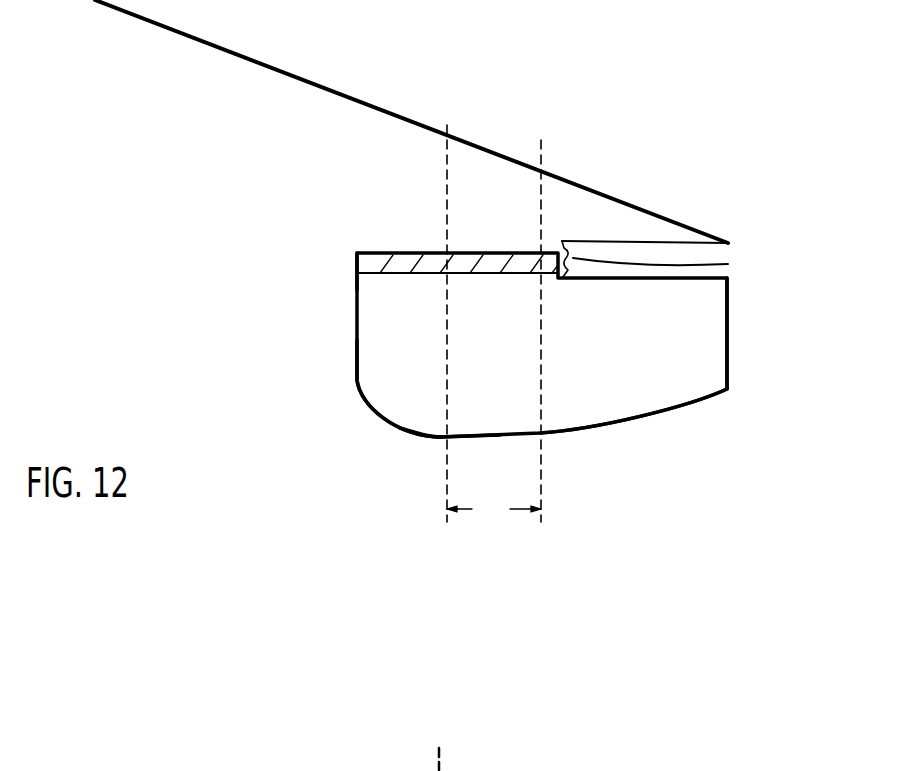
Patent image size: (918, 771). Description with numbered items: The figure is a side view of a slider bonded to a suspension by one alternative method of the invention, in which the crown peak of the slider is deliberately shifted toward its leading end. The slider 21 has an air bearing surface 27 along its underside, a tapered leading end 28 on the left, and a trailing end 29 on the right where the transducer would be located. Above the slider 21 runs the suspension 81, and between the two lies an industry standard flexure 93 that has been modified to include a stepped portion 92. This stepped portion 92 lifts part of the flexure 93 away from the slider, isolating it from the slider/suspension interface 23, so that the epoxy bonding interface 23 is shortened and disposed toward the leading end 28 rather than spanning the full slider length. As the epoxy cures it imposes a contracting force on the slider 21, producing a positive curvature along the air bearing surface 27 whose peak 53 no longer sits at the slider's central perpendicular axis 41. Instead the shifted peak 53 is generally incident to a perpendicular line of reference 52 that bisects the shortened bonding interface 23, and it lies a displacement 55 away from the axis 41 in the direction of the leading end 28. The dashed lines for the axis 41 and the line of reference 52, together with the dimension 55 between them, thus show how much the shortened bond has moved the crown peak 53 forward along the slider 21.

The suspension 81 is at (370, 103).
The perpendicular line of reference 52 is at (455, 128).
The perpendicular axis 41 is at (546, 138).
The flexure 93 is at (408, 252).
The bonding interface 23 is at (357, 268).
The stepped portion 92 is at (728, 264).
The tapered leading end 28 is at (357, 375).
The slider 21 is at (542, 345).
The trailing end 29 is at (728, 338).
The peak 53 is at (440, 437).
The air bearing surface 27 is at (612, 425).
The vertical displacement 55 is at (494, 509).